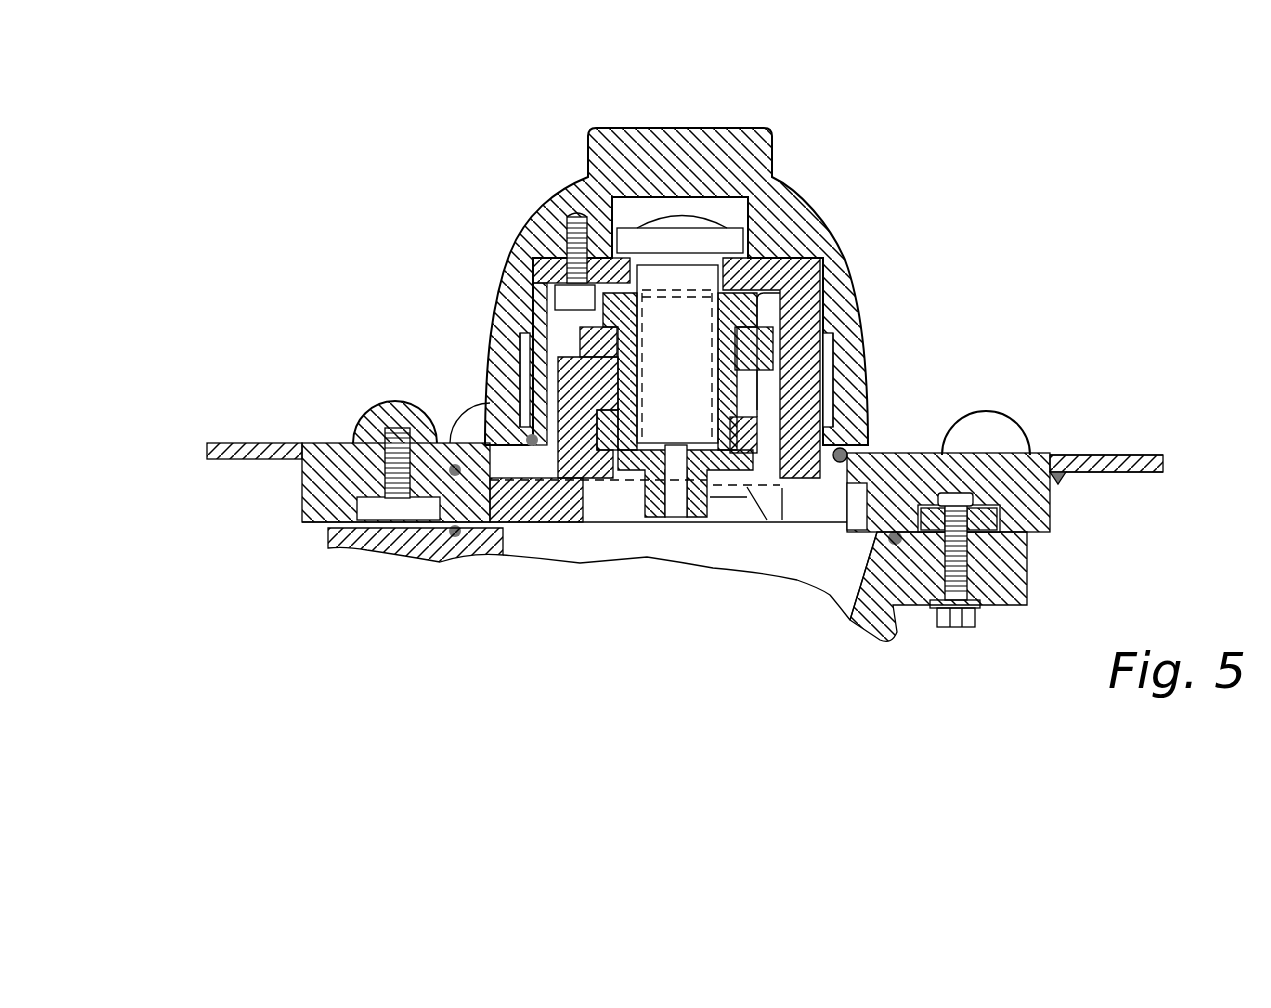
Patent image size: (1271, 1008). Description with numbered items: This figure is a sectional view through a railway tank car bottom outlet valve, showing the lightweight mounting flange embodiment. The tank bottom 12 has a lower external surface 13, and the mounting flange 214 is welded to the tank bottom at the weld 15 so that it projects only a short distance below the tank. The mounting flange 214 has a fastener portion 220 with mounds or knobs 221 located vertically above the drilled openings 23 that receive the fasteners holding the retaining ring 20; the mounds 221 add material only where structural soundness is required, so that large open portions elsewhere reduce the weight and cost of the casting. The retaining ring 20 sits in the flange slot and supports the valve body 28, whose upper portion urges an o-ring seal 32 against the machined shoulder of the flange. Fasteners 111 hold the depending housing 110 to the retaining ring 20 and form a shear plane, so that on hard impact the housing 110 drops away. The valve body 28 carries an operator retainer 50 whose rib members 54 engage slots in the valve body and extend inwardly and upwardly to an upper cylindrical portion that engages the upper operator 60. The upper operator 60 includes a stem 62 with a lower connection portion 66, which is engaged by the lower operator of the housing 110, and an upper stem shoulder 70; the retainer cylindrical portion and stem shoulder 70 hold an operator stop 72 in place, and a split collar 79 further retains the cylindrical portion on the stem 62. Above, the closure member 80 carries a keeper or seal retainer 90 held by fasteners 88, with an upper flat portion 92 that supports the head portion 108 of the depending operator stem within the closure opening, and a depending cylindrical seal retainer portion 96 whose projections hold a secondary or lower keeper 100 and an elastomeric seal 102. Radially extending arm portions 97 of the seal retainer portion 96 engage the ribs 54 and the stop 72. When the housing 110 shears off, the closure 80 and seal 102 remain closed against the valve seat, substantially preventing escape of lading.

The closure member 80 is at (722, 120).
The head portion 108 is at (748, 203).
The keeper or seal retainer 90 is at (782, 262).
The upper stem shoulder 70 is at (770, 318).
The operator stop 72 is at (835, 262).
The upper flat portion 92 is at (527, 262).
The fasteners 88 is at (530, 280).
The depending cylindrical seal retainer portion 96 is at (540, 356).
The arm portions 97 is at (800, 375).
The split collar 79 is at (763, 425).
The secondary or lower keeper 100 is at (800, 440).
The elastomeric seal 102 is at (850, 448).
The mounds or knobs 221 is at (392, 400).
The fastener portion 220 is at (1050, 453).
The mounting flange 214 is at (1127, 455).
The tank bottom 12 is at (1130, 456).
The lower external surface 13 is at (1140, 478).
The weld 15 is at (1060, 480).
The depending housing 110 is at (1032, 577).
The retaining ring 20 is at (975, 520).
The fasteners 111 is at (960, 627).
The valve body 28 is at (857, 600).
The lower connection portion 66 is at (702, 497).
The upper operator 60 is at (637, 497).
The operator retainer 50 is at (568, 528).
The rib members 54 is at (572, 432).
The drilled openings 23 is at (382, 470).
The o-ring seal 32 is at (452, 440).
The stem 62 is at (690, 377).